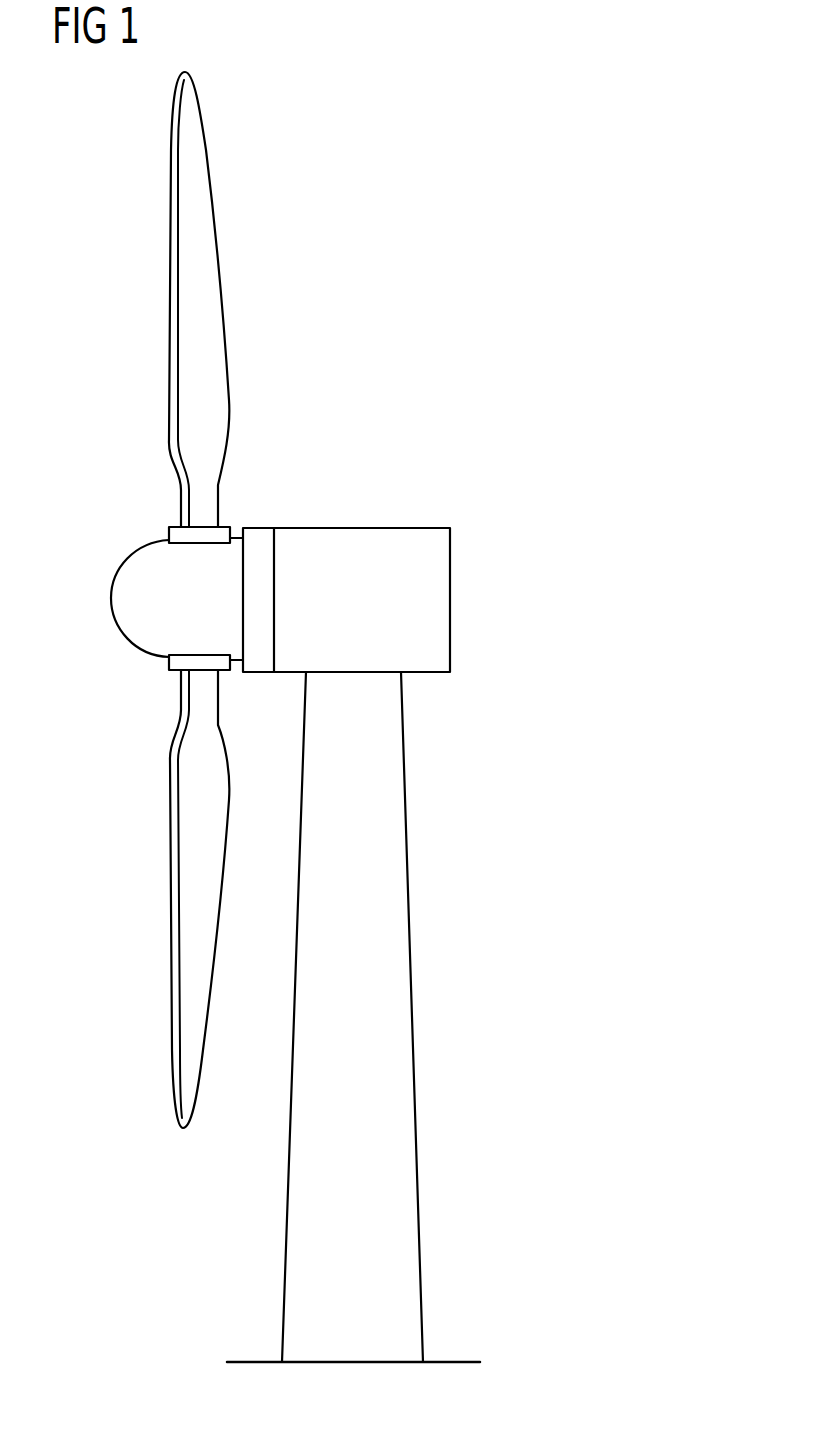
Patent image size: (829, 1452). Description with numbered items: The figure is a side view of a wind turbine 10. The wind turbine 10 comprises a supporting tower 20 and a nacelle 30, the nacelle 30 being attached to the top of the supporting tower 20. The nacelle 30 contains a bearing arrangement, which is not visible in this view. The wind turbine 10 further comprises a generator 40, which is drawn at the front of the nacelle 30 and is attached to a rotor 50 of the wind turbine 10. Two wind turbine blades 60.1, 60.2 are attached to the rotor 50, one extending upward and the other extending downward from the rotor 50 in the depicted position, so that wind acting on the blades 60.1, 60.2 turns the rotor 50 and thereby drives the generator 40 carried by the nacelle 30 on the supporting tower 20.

The wind turbine 10 is at (450, 422).
The supporting tower 20 is at (400, 997).
The nacelle 30 is at (396, 538).
The generator 40 is at (263, 538).
The rotor 50 is at (122, 595).
The wind turbine blade 60.1 is at (193, 881).
The wind turbine blade 60.2 is at (193, 312).